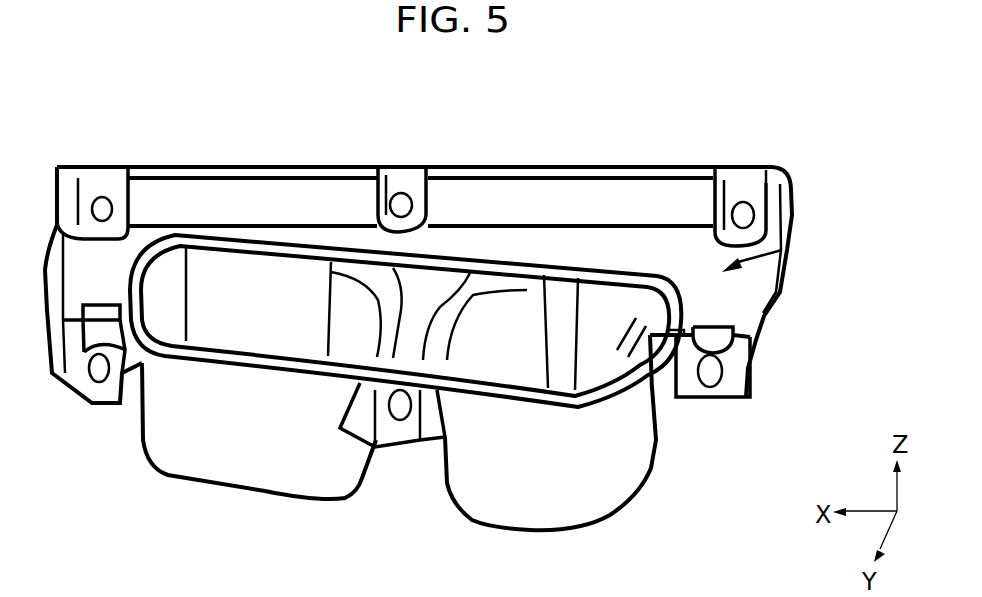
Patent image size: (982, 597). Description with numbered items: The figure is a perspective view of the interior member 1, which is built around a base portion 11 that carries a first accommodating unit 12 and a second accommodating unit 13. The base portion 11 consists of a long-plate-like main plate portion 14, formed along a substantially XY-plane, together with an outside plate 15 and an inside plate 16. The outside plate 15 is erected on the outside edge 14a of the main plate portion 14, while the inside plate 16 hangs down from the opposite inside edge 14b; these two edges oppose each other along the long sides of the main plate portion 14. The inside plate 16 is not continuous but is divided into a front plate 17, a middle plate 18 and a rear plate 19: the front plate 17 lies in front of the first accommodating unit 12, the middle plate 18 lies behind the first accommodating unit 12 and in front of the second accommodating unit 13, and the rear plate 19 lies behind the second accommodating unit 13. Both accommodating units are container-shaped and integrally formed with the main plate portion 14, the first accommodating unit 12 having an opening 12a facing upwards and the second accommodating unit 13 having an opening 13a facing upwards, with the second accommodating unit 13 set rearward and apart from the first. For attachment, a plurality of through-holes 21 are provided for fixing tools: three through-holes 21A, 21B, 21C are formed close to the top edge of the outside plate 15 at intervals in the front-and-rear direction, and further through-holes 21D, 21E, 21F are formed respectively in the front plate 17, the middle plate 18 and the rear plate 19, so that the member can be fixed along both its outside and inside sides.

The interior member 1 is at (683, 150).
The base portion 11 is at (866, 178).
The first accommodating unit 12 is at (263, 497).
The opening 12a is at (227, 267).
The second accommodating unit 13 is at (520, 533).
The opening 13a is at (495, 312).
The main plate portion 14 is at (752, 294).
The outside edge 14a is at (607, 223).
The inside edge 14b is at (667, 337).
The outside plate 15 is at (773, 200).
The inside plate 16 is at (740, 356).
The front plate 17 is at (70, 362).
The middle plate 18 is at (410, 435).
The rear plate 19 is at (740, 377).
The through-holes 21 is at (448, 342).
The through-hole 21A is at (106, 200).
The through-hole 21B is at (396, 200).
The through-hole 21C is at (736, 208).
The through-hole 21D is at (100, 368).
The through-hole 21E is at (397, 405).
The through-hole 21F is at (712, 380).